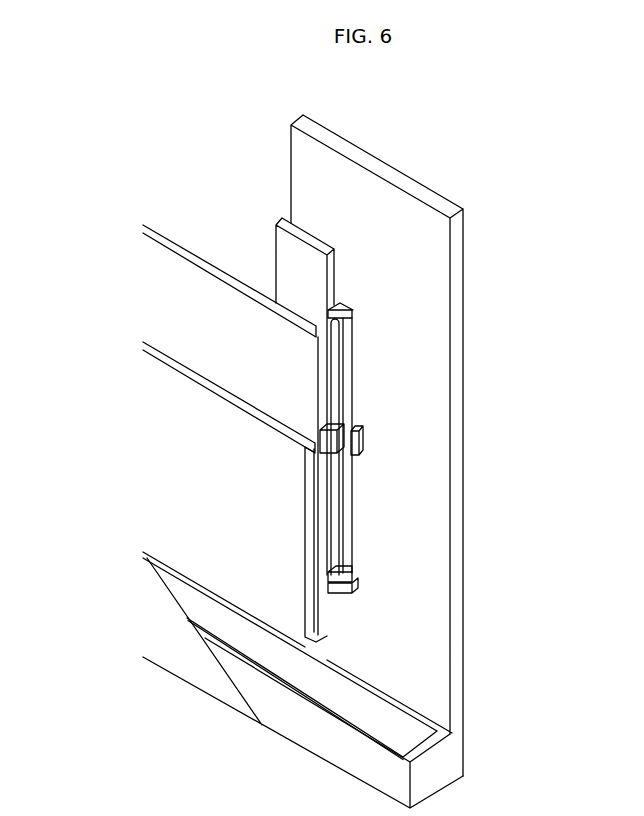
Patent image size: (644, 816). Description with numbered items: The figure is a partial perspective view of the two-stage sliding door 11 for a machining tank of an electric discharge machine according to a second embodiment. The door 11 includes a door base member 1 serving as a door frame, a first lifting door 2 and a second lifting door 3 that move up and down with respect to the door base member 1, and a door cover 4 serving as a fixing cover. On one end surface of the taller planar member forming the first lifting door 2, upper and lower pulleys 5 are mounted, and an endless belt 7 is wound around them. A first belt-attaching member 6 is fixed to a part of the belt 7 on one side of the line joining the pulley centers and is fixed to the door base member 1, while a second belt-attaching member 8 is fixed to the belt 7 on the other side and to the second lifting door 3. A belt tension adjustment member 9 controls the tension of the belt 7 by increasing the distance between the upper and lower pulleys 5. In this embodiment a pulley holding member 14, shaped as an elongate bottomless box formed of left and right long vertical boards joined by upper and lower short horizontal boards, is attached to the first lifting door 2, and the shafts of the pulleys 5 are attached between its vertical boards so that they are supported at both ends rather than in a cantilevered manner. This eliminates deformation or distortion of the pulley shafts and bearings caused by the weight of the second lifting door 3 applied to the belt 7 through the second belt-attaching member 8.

The door base member 1 is at (467, 277).
The first lifting door 2 is at (336, 241).
The second lifting door 3 is at (284, 302).
The door cover 4 is at (232, 711).
The pulleys 5 is at (357, 322).
The first belt-attaching member 6 is at (362, 429).
The endless belt 7 is at (339, 482).
The second belt-attaching member 8 is at (344, 450).
The belt tension adjustment member 9 is at (357, 593).
The door 11 is at (183, 678).
The pulley holding member 14 is at (357, 512).